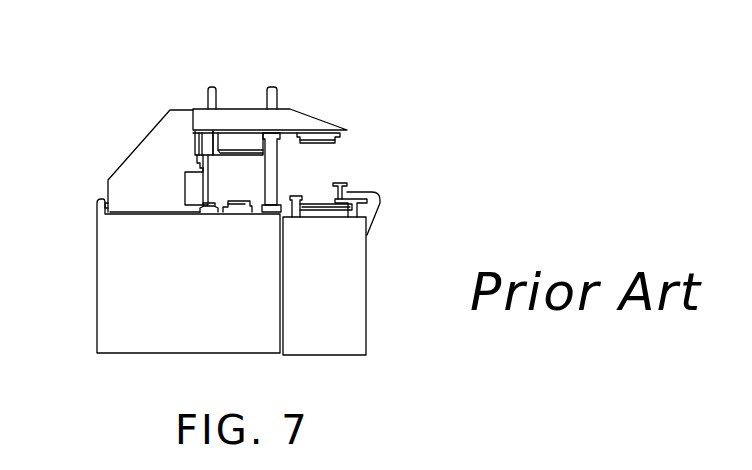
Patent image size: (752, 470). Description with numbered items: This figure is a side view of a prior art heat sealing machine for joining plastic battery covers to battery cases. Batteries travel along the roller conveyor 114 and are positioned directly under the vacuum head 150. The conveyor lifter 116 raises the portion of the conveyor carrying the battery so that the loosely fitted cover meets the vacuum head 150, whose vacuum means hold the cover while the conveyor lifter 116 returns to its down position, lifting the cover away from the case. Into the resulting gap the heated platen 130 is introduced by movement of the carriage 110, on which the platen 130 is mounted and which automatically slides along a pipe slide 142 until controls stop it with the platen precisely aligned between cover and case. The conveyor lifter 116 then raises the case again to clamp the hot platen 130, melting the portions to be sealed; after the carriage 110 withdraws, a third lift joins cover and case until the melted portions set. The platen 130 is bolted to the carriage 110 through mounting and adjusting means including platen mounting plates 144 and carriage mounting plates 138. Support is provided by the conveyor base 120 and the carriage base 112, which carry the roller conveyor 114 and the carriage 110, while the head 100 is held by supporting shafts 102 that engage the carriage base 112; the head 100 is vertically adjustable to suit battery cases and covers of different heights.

The head 100 is at (310, 124).
The supporting shafts 102 is at (275, 87).
The carriage 110 is at (127, 173).
The carriage base 112 is at (132, 342).
The roller conveyor 114 is at (316, 197).
The conveyor lifter 116 is at (380, 210).
The conveyor base 120 is at (310, 343).
The heated platen 130 is at (264, 172).
The carriage mounting plates 138 is at (195, 145).
The pipe slide 142 is at (228, 212).
The platen mounting plates 144 is at (200, 160).
The vacuum head 150 is at (340, 141).